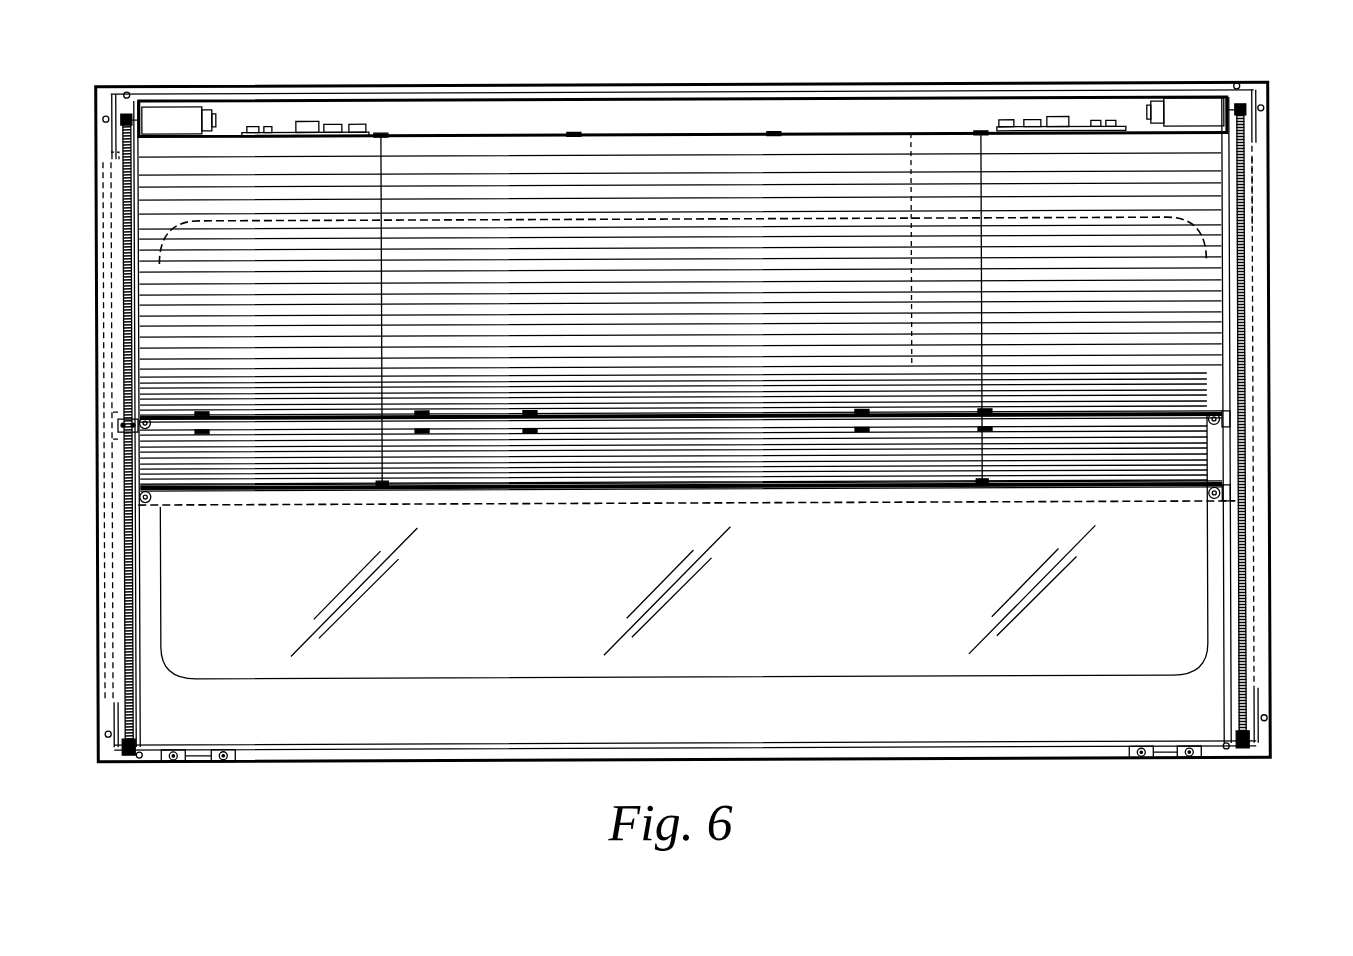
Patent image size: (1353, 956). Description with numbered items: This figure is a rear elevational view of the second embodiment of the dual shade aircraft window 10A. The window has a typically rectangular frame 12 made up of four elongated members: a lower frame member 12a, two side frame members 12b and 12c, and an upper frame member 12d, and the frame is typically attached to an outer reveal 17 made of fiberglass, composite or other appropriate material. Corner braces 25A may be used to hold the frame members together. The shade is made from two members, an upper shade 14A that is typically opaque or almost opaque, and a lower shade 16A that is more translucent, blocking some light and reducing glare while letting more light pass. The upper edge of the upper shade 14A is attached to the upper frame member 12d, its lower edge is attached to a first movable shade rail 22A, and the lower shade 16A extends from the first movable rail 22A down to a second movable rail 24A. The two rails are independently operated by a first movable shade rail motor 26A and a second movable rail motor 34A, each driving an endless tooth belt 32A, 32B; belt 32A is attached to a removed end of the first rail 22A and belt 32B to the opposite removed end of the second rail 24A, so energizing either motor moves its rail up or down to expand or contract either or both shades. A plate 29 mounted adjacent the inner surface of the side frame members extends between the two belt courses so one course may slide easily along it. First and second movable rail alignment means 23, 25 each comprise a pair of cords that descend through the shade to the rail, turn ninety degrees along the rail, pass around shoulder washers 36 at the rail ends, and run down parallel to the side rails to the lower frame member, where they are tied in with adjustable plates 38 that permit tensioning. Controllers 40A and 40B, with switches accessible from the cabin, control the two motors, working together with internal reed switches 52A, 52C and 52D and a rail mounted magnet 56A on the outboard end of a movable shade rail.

The dual shade window 10A is at (933, 768).
The frame 12 is at (1290, 302).
The lower frame member 12a is at (743, 760).
The side frame member 12b is at (100, 320).
The side frame member 12c is at (1275, 606).
The upper frame member 12d is at (625, 85).
The upper shade 14A is at (680, 250).
The lower shade 16A is at (673, 428).
The outer reveal 17 is at (693, 624).
The first movable shade rail 22A is at (770, 422).
The first movable rail alignment means 23 is at (425, 500).
The second movable shade rail 24A is at (563, 496).
The second movable rail alignment means 25 is at (315, 500).
The corner brace 25A is at (115, 93).
The first movable shade rail motor 26A is at (183, 108).
The plate 29 is at (115, 610).
The endless tooth belt 32A is at (123, 148).
The endless tooth belt 32B is at (1243, 130).
The second movable rail motor 34A is at (1192, 108).
The shoulder washers 36 is at (152, 497).
The adjustable plates 38 is at (222, 760).
The controller 40A is at (313, 116).
The controller 40B is at (1052, 110).
The internal reed switch 52A is at (105, 710).
The internal reed switch 52C is at (107, 172).
The internal reed switch 52D is at (1257, 173).
The rail mounted magnet 56A is at (118, 423).